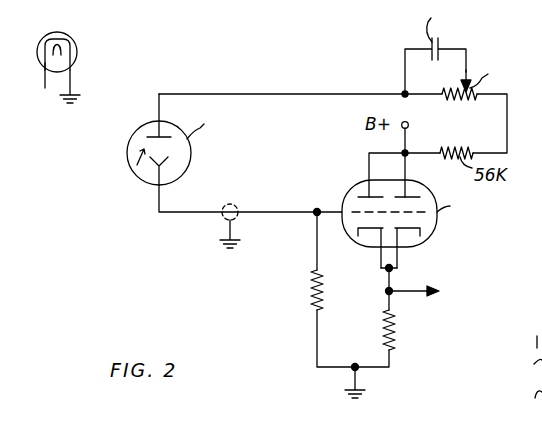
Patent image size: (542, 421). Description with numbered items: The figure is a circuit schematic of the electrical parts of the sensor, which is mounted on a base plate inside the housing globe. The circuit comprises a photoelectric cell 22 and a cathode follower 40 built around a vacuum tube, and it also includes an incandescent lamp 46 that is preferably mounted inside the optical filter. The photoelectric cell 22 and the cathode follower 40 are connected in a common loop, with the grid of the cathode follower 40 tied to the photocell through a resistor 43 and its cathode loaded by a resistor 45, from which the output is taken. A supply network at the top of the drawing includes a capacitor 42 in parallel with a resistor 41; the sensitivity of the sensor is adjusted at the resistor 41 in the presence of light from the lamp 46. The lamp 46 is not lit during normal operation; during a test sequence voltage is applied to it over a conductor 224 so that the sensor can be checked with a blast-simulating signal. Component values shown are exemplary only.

The incandescent lamp 46 is at (77, 48).
The conductor 224 is at (33, 89).
The photoelectric cell 22 is at (129, 162).
The capacitor 42 is at (441, 54).
The resistor 41 is at (470, 101).
The cathode follower 40 is at (433, 237).
The resistor 43 is at (313, 300).
The resistor 45 is at (392, 340).